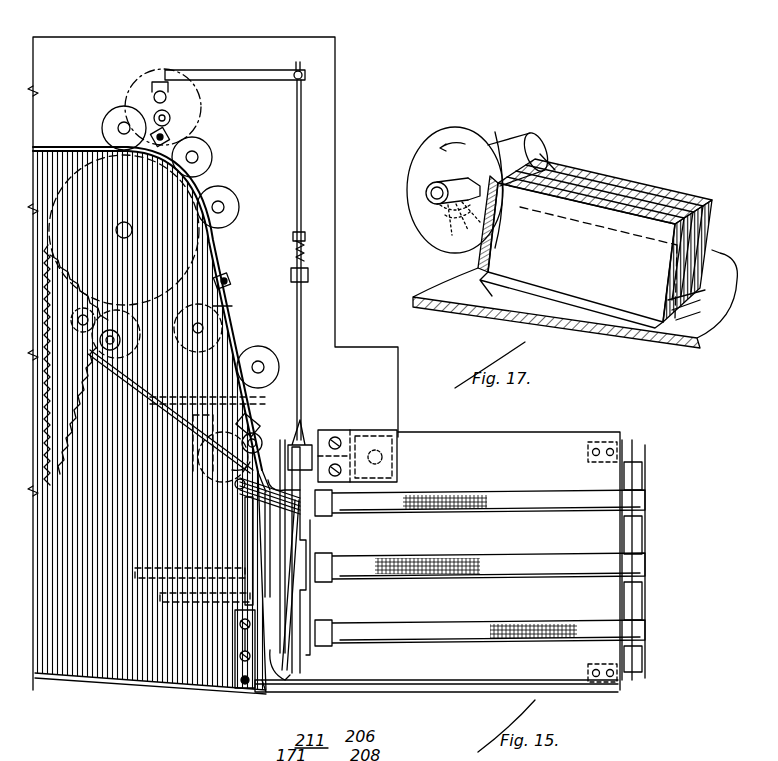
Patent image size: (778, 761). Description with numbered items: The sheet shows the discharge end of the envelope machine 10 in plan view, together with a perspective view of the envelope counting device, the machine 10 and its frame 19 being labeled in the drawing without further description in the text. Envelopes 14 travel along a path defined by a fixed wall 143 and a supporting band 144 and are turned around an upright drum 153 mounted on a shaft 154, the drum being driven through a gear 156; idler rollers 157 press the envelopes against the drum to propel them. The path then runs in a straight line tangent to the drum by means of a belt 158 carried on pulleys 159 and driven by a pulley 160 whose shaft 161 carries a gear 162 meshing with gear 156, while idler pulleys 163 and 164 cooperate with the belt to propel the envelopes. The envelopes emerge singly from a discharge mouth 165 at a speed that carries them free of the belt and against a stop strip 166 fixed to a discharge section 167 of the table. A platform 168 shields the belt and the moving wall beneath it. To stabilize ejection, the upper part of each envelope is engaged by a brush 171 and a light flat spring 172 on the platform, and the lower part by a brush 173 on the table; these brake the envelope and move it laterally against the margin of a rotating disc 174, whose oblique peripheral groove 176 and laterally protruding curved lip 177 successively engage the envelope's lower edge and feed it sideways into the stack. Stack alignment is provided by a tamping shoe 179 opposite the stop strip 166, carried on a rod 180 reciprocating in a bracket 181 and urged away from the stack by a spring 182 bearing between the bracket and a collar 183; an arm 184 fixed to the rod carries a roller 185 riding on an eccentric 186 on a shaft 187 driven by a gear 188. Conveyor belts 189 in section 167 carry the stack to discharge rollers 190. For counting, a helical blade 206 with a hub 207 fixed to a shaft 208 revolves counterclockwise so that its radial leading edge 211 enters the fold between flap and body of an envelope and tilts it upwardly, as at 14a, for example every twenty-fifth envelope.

In FIG. 15, the housing frame 10 is at (322, 100).
In FIG. 15, the cabinet 19 is at (128, 30).
In FIG. 17, the envelopes 14 is at (690, 165).
In FIG. 17, the tilted envelope 14a is at (605, 135).
In FIG. 15, the fixed wall 143 is at (218, 296).
In FIG. 15, the supporting band 144 is at (226, 308).
In FIG. 15, the drum 153 is at (84, 148).
In FIG. 15, the shaft 154 is at (132, 232).
In FIG. 15, the gear 156 is at (76, 365).
In FIG. 15, the idler rollers 157 is at (222, 188).
In FIG. 15, the belt 158 is at (128, 405).
In FIG. 15, the pulleys 159 is at (192, 498).
In FIG. 15, the pulley 160 is at (122, 338).
In FIG. 15, the shaft 161 is at (121, 344).
In FIG. 15, the gear 162 is at (116, 352).
In FIG. 15, the idler pulley 163 is at (262, 347).
In FIG. 15, the idler pulley 164 is at (278, 420).
In FIG. 15, the discharge mouth 165 is at (250, 485).
In FIG. 15, the stop strip 166 is at (458, 692).
In FIG. 15, the discharge section 167 is at (534, 426).
In FIG. 15, the platform 168 is at (110, 665).
In FIG. 15, the brush 171 is at (302, 520).
In FIG. 15, the flat spring 172 is at (296, 670).
In FIG. 15, the brush 173 is at (268, 692).
In FIG. 15, the disc 174 is at (310, 621).
In FIG. 15, the groove 176 is at (306, 602).
In FIG. 15, the curved lip 177 is at (240, 606).
In FIG. 15, the tamping shoe 179 is at (396, 478).
In FIG. 15, the rod 180 is at (308, 300).
In FIG. 15, the bracket 181 is at (312, 274).
In FIG. 15, the spring 182 is at (306, 252).
In FIG. 15, the collar 183 is at (310, 236).
In FIG. 15, the arm 184 is at (250, 72).
In FIG. 15, the roller 185 is at (178, 97).
In FIG. 15, the eccentric 186 is at (158, 90).
In FIG. 15, the shaft 187 is at (176, 120).
In FIG. 15, the gear 188 is at (186, 140).
In FIG. 15, the conveyor belts 189 is at (548, 570).
In FIG. 15, the discharge rollers 190 is at (645, 580).
In FIG. 15, the helical blade 206 is at (321, 440).
In FIG. 17, the helical blade 206 is at (470, 140).
In FIG. 17, the hub 207 is at (438, 180).
In FIG. 17, the shaft 208 is at (428, 195).
In FIG. 17, the leading edge 211 is at (480, 150).